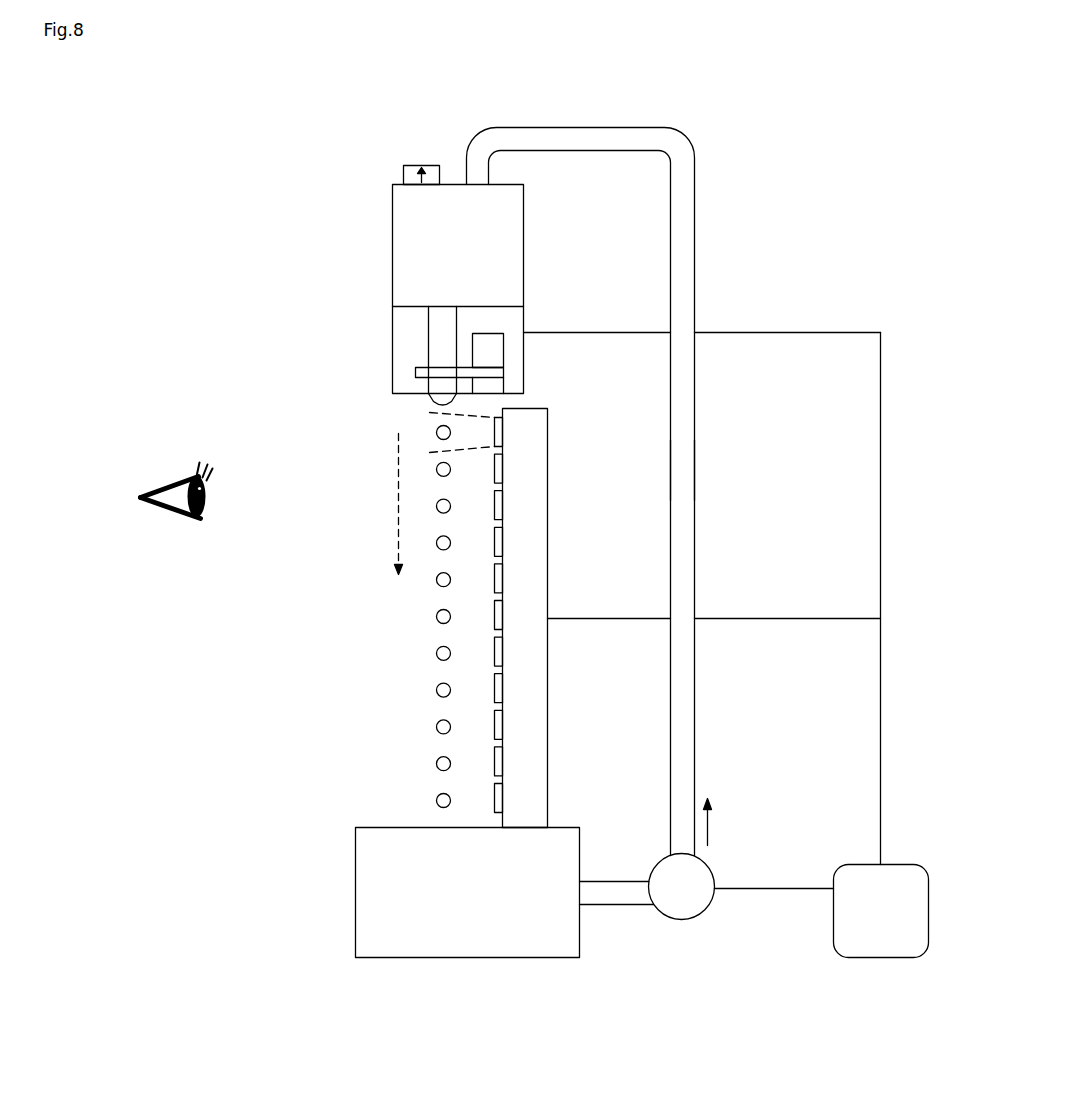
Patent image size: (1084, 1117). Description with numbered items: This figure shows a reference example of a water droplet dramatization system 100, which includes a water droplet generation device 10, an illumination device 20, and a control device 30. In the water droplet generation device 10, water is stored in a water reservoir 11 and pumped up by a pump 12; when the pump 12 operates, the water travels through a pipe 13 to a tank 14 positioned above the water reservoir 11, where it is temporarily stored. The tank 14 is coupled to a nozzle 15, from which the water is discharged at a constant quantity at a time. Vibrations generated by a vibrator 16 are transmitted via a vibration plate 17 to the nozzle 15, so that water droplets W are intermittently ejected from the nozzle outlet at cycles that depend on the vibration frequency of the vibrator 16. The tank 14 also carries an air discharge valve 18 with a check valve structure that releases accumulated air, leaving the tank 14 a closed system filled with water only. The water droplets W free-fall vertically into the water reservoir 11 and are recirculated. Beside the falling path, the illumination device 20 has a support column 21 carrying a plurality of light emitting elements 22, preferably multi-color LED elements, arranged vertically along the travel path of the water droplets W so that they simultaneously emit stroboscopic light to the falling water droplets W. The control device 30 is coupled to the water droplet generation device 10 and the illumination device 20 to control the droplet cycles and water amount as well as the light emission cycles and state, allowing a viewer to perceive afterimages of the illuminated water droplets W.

The water droplet dramatization system 100 is at (276, 218).
The water droplet generation device 10 is at (544, 100).
The water reservoir 11 is at (355, 892).
The pump 12 is at (705, 907).
The pipe 13 is at (694, 466).
The tank 14 is at (523, 246).
The nozzle 15 is at (428, 327).
The vibrator 16 is at (503, 356).
The vibration plate 17 is at (415, 374).
The air discharge valve 18 is at (412, 163).
The illumination device 20 is at (568, 430).
The support column 21 is at (548, 476).
The light emitting elements 22 is at (500, 505).
The control device 30 is at (910, 845).
The water droplets W is at (433, 650).